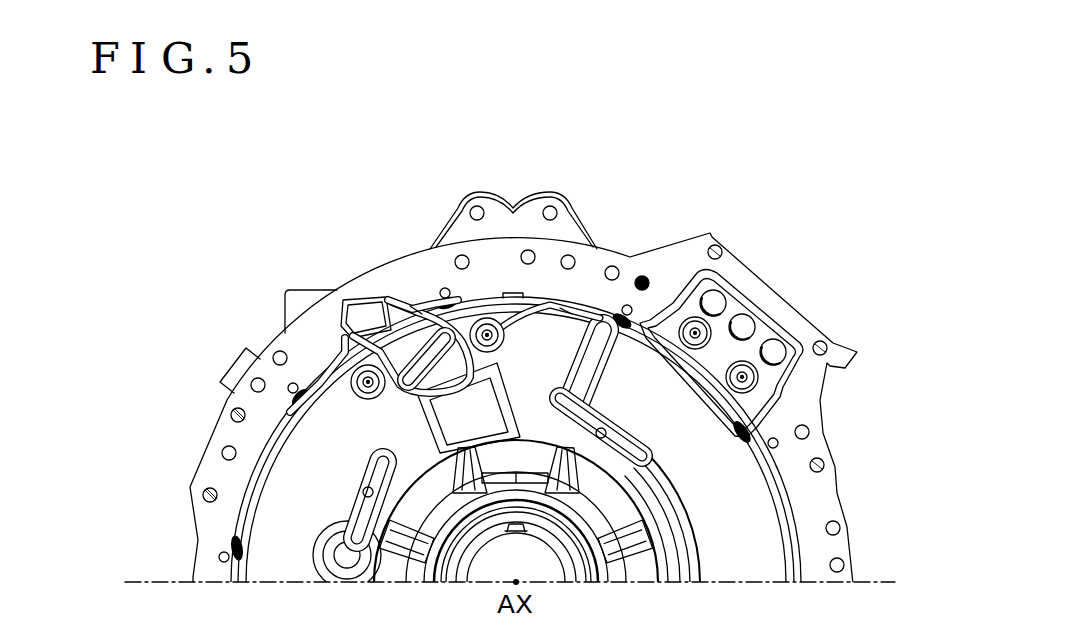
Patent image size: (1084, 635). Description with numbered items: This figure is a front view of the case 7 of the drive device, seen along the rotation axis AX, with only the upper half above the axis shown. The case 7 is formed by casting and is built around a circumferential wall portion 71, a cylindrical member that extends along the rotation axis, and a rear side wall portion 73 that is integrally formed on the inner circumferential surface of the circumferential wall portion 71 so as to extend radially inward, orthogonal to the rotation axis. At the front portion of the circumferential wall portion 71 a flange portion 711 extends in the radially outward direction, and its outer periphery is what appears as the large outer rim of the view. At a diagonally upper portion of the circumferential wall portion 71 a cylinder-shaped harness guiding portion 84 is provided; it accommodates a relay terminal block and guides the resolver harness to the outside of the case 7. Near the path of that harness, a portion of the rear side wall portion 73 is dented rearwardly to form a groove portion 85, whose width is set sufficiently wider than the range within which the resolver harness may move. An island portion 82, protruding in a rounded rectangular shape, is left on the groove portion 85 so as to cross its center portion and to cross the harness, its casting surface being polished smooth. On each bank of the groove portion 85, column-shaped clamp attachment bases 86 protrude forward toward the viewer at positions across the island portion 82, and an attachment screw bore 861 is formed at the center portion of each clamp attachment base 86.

The case 7 is at (285, 189).
The circumferential wall portion 71 is at (198, 408).
The flange portion 711 is at (208, 467).
The rear side wall portion 73 is at (740, 517).
The island portion 82 is at (318, 437).
The harness guiding portion 84 is at (300, 302).
The groove portion 85 is at (415, 306).
The clamp attachment base 86 is at (338, 353).
The attachment screw bore 861 is at (350, 380).